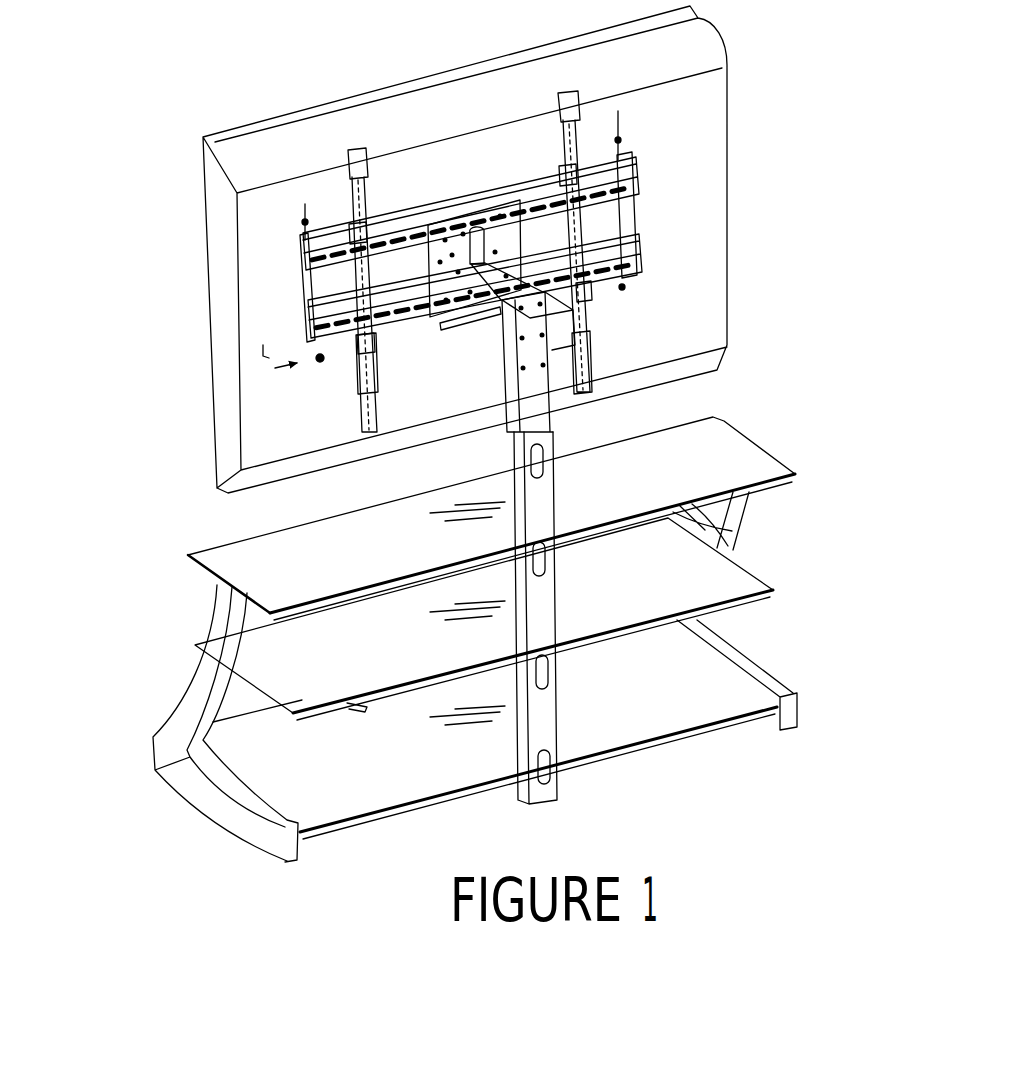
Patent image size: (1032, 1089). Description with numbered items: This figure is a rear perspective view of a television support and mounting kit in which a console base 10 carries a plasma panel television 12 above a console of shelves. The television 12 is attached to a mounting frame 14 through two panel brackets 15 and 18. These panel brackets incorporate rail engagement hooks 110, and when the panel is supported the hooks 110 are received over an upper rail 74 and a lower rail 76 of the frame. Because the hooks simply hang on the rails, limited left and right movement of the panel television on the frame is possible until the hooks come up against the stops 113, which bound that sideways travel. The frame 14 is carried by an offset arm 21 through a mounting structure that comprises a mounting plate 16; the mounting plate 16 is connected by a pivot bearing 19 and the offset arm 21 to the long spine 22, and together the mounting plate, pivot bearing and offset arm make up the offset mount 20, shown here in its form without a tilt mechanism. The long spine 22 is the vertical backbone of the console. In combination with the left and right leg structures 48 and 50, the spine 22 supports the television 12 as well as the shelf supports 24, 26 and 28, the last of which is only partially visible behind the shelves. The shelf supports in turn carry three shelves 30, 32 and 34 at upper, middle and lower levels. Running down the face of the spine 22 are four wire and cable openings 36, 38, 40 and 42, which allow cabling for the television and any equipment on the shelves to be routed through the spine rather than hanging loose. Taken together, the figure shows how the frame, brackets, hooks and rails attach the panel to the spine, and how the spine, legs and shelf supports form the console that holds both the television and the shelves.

The console base 10 is at (180, 788).
The plasma panel television 12 is at (367, 88).
The mounting frame 14 is at (531, 255).
The panel bracket 15 is at (365, 190).
The mounting plate 16 is at (443, 312).
The panel bracket 18 is at (575, 116).
The pivot bearing 19 is at (494, 254).
The offset mount 20 is at (481, 292).
The offset arm 21 is at (493, 305).
The long spine 22 is at (538, 548).
The shelf support 24 is at (740, 527).
The shelf support 26 is at (702, 618).
The shelf support 28 is at (730, 726).
The shelf 30 is at (491, 518).
The shelf 32 is at (484, 620).
The shelf 34 is at (538, 772).
The wire and cable opening 36 is at (538, 444).
The wire and cable opening 38 is at (541, 578).
The wire and cable opening 40 is at (543, 690).
The wire and cable opening 42 is at (551, 786).
The leg structure 48 is at (170, 698).
The leg structure 50 is at (768, 611).
The rail 74 is at (437, 200).
The rail 76 is at (403, 345).
The rail engagement hooks 110 is at (347, 232).
The stops 113 is at (323, 363).